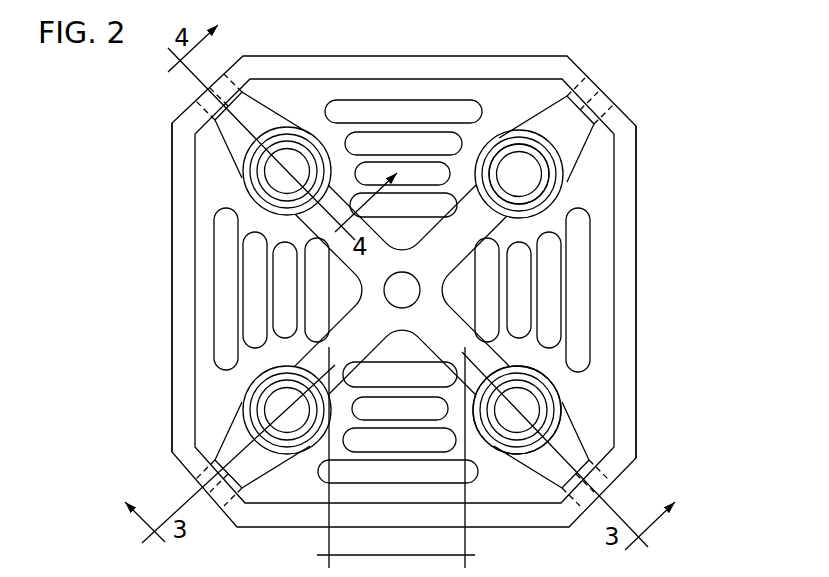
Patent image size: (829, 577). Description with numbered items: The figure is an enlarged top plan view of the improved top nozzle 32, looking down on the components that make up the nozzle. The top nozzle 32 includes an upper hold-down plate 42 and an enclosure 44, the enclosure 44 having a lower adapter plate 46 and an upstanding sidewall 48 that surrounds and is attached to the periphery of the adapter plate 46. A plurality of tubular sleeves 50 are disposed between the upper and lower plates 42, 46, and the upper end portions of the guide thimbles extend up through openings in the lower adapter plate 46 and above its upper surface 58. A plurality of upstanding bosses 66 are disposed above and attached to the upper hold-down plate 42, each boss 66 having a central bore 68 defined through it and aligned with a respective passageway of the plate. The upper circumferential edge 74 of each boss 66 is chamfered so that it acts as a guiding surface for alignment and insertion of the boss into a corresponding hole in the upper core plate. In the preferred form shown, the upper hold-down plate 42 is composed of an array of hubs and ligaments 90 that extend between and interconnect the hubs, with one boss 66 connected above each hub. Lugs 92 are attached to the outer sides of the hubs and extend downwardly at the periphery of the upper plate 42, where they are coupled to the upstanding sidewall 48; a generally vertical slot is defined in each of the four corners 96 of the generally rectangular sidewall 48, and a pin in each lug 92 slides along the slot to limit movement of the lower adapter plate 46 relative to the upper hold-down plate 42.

The top nozzle 32 is at (648, 132).
The upper hold-down plate 42 is at (565, 403).
The enclosure 44 is at (170, 279).
The lower adapter plate 46 is at (213, 390).
The upstanding sidewall 48 is at (638, 289).
The tubular sleeves 50 is at (266, 170).
The upper surface 58 is at (580, 199).
The upstanding bosses 66 is at (531, 140).
The central bore 68 is at (281, 130).
The upper circumferential edge 74 is at (292, 143).
The ligaments 90 is at (347, 205).
The lugs 92 is at (568, 110).
The corners 96 is at (613, 115).